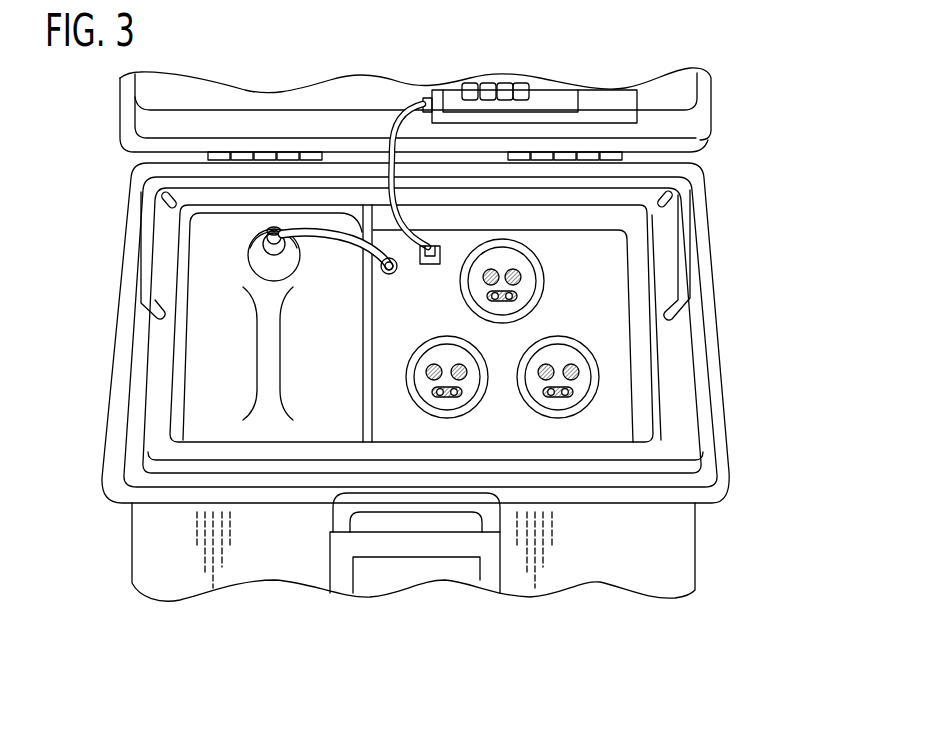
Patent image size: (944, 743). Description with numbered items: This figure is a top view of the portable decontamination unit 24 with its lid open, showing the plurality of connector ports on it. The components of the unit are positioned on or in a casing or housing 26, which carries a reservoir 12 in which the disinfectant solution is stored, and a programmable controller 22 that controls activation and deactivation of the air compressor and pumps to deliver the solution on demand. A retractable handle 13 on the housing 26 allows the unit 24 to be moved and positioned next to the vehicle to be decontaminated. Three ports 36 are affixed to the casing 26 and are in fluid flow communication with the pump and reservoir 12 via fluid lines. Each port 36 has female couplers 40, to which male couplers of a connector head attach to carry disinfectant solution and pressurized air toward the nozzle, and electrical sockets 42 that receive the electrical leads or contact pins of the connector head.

The reservoir 12 is at (339, 374).
The retractable handle 13 is at (402, 506).
The programmable controller 22 is at (548, 90).
The decontamination unit 24 is at (735, 546).
The housing 26 is at (634, 563).
The port 36 is at (537, 262).
The female couplers 40 is at (508, 283).
The electrical sockets 42 is at (553, 399).